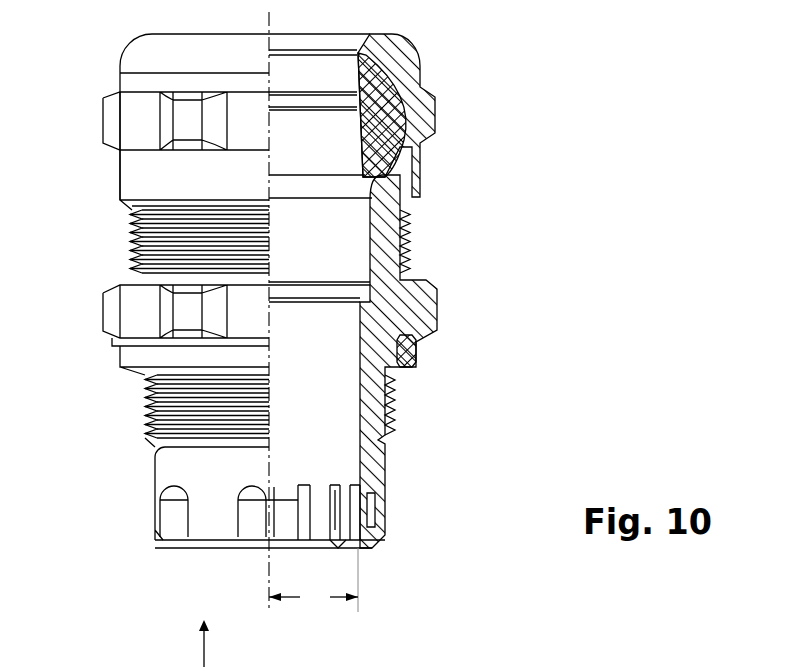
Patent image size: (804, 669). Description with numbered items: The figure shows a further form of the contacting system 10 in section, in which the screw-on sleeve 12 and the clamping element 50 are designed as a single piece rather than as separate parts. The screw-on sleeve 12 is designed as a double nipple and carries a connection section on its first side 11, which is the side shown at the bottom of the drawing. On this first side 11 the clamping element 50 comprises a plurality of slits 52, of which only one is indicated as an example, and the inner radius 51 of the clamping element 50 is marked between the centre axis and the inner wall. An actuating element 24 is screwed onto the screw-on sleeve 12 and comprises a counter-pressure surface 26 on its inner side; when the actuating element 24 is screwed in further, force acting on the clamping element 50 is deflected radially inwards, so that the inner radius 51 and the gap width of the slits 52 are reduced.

The contacting system 10 is at (455, 168).
The first side 11 is at (214, 644).
The screw-on sleeve 12 is at (437, 306).
The actuating element 24 is at (155, 496).
The counter-pressure surface 26 is at (367, 535).
The clamping element 50 is at (343, 513).
The inner radius 51 is at (313, 580).
The slit 52 is at (340, 545).